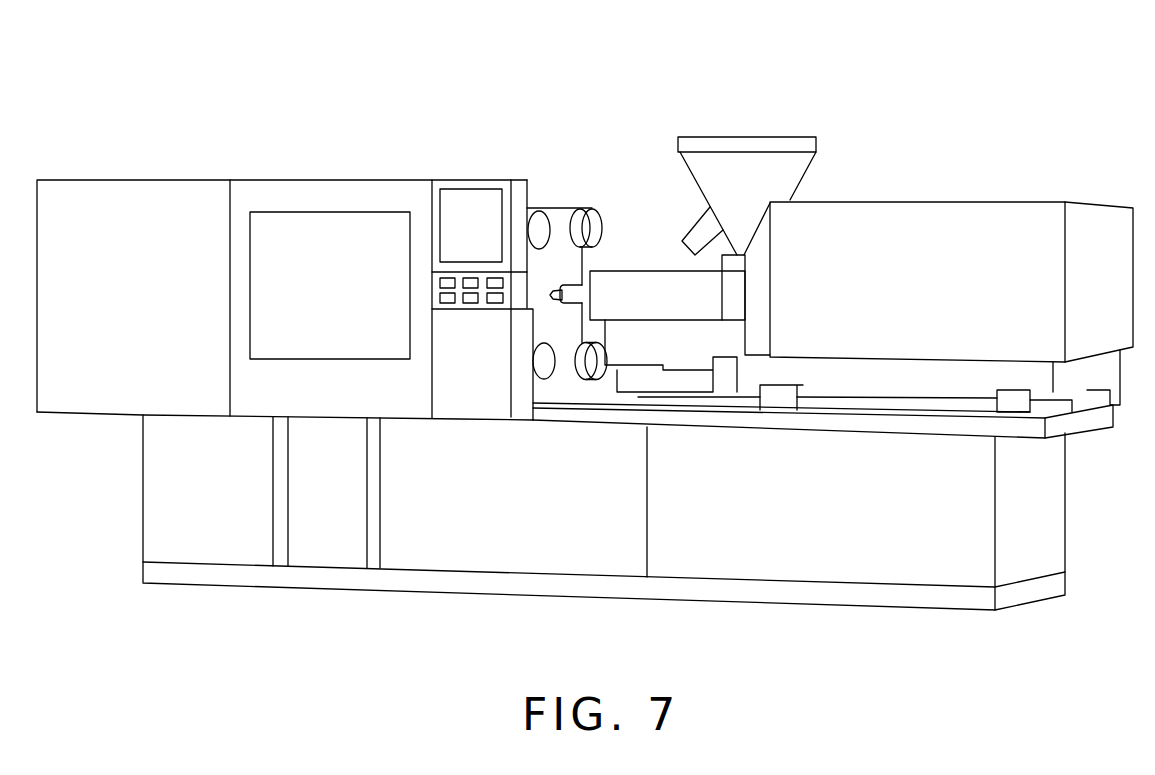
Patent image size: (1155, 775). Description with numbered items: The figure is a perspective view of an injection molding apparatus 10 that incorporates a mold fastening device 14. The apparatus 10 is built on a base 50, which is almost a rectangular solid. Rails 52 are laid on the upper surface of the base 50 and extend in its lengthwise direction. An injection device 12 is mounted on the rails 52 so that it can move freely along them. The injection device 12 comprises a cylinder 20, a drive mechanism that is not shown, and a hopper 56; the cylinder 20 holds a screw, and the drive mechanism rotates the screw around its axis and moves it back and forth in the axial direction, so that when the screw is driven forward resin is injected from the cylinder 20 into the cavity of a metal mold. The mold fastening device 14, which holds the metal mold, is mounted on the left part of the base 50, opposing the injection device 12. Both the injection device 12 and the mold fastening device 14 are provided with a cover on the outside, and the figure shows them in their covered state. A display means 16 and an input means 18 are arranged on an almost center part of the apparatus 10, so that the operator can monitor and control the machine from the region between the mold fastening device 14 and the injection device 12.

The injection molding apparatus 10 is at (598, 100).
The injection device 12 is at (917, 132).
The mold fastening device 14 is at (352, 107).
The display means 16 is at (458, 205).
The input means 18 is at (493, 280).
The cylinder 20 is at (662, 283).
The base 50 is at (1053, 533).
The rails 52 is at (863, 410).
The hopper 56 is at (781, 160).